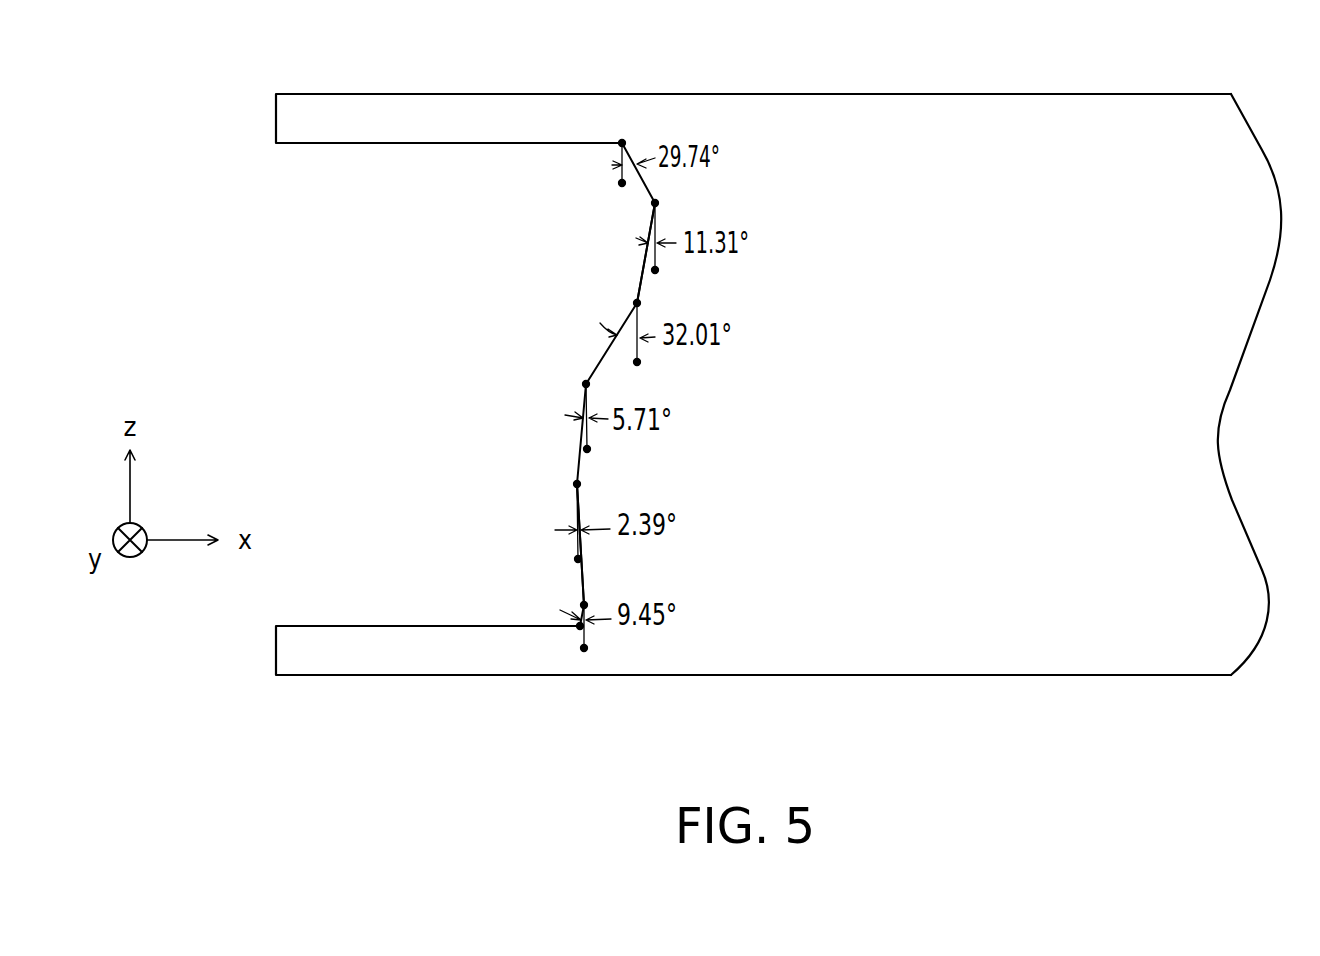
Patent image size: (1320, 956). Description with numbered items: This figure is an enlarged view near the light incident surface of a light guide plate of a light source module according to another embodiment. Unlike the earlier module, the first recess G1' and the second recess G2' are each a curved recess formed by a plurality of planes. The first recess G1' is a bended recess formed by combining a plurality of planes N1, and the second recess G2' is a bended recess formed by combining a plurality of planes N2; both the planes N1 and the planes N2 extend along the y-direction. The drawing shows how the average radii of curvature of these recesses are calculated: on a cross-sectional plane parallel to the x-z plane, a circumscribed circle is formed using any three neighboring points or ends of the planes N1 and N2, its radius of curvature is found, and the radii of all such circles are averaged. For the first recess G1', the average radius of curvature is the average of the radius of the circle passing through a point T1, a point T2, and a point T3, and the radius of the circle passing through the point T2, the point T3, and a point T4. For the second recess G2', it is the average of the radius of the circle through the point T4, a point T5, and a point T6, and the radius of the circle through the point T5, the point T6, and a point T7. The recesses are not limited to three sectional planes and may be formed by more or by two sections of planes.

The first recess G1' is at (555, 159).
The second recess G2' is at (513, 611).
The planes N1 is at (633, 194).
The planes N2 is at (574, 460).
The point T1 is at (622, 143).
The point T2 is at (655, 203).
The point T3 is at (637, 303).
The point T4 is at (586, 384).
The point T5 is at (577, 484).
The point T6 is at (584, 605).
The point T7 is at (580, 626).